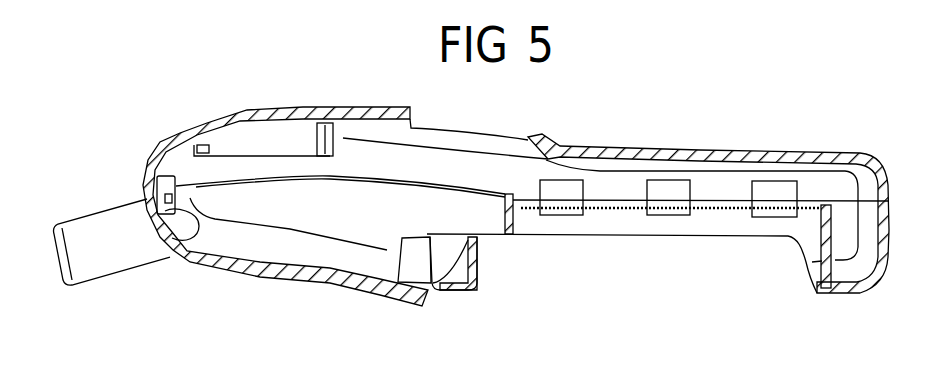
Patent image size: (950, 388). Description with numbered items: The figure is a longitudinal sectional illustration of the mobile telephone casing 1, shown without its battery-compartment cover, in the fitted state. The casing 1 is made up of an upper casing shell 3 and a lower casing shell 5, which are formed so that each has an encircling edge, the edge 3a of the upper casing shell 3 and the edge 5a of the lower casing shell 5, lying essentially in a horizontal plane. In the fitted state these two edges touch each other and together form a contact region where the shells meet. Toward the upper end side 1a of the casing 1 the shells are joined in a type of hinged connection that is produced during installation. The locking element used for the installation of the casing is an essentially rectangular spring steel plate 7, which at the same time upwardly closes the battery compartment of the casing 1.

The mobile telephone casing 1 is at (147, 135).
The upper end side 1a is at (147, 184).
The upper casing shell 3 is at (797, 151).
The encircling edge of the upper casing shell 3a is at (613, 197).
The lower casing shell 5 is at (828, 297).
The encircling edge of the lower casing shell 5a is at (474, 193).
The spring steel plate 7 is at (632, 213).